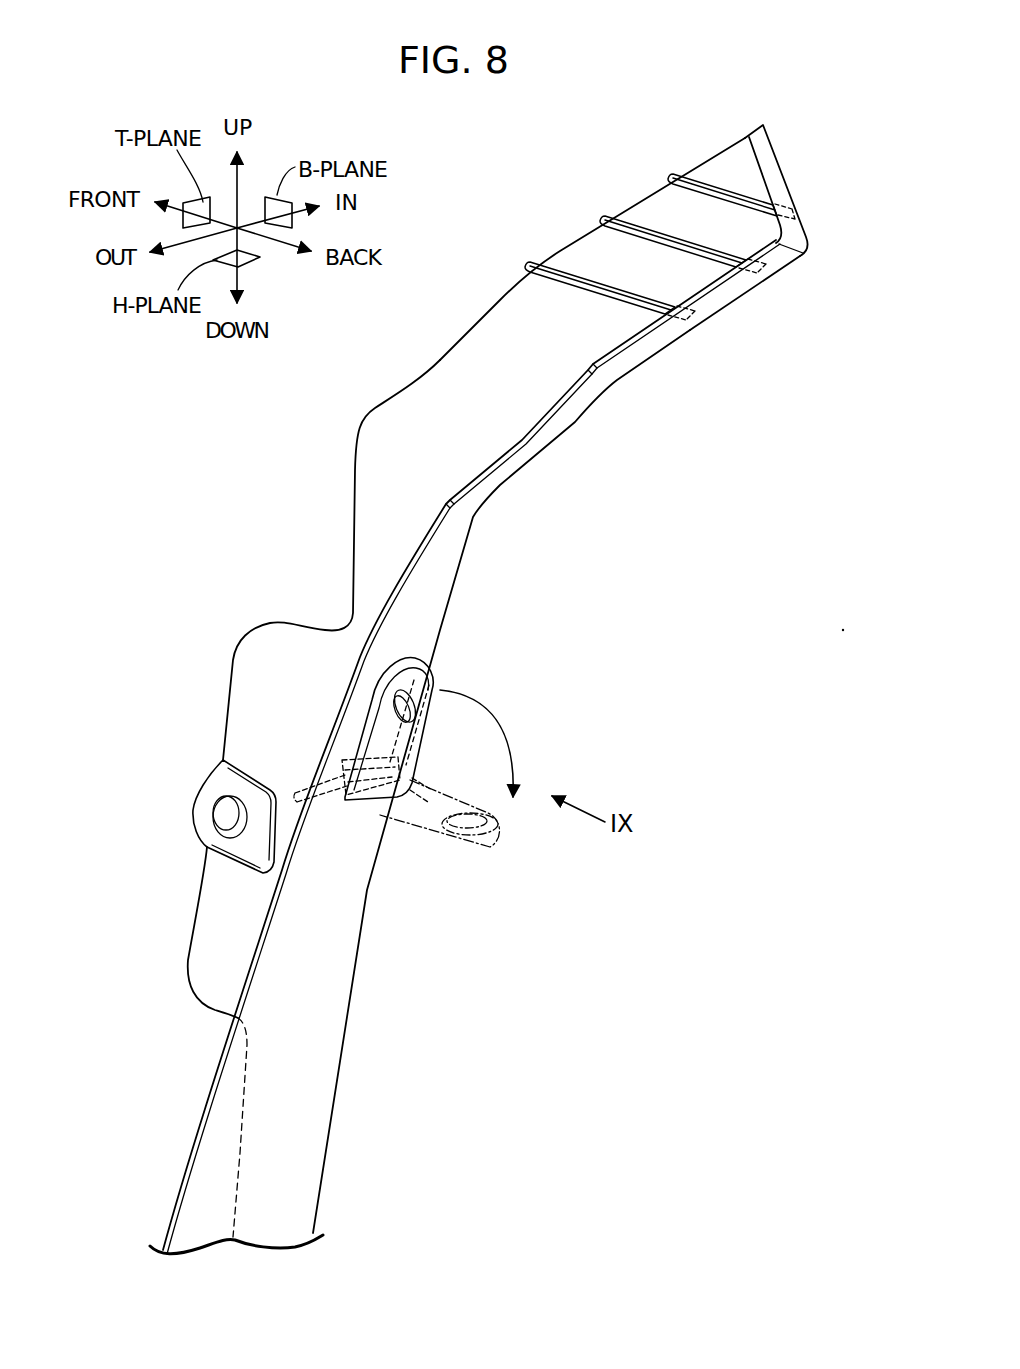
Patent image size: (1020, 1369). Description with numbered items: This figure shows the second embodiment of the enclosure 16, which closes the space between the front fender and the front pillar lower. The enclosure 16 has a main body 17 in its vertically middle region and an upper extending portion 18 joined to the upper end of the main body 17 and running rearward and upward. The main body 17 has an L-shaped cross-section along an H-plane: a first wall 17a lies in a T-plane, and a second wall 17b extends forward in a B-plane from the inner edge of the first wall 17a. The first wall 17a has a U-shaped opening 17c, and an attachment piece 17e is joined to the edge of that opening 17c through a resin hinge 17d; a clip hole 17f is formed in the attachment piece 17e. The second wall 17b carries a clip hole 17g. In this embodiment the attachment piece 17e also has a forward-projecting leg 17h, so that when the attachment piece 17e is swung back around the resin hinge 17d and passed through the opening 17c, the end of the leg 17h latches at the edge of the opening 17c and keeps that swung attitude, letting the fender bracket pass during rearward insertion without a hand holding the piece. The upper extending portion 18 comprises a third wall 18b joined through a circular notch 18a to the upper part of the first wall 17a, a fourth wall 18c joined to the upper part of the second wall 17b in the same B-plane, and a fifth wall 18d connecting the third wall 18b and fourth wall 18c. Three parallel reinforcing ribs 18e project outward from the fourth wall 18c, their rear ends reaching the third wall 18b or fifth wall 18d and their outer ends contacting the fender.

The enclosure 16 is at (394, 956).
The main body 17 is at (350, 1003).
The first wall 17a is at (300, 1160).
The second wall 17b is at (200, 968).
The opening 17c is at (363, 730).
The resin hinge 17d is at (377, 807).
The attachment piece 17e is at (413, 748).
The clip hole 17f is at (428, 688).
The clip hole 17g is at (217, 803).
The leg 17h is at (303, 787).
The upper extending portion 18 is at (556, 237).
The circular notch 18a is at (493, 472).
The third wall 18b is at (690, 330).
The fourth wall 18c is at (510, 298).
The fifth wall 18d is at (770, 153).
The reinforcing ribs 18e is at (703, 182).